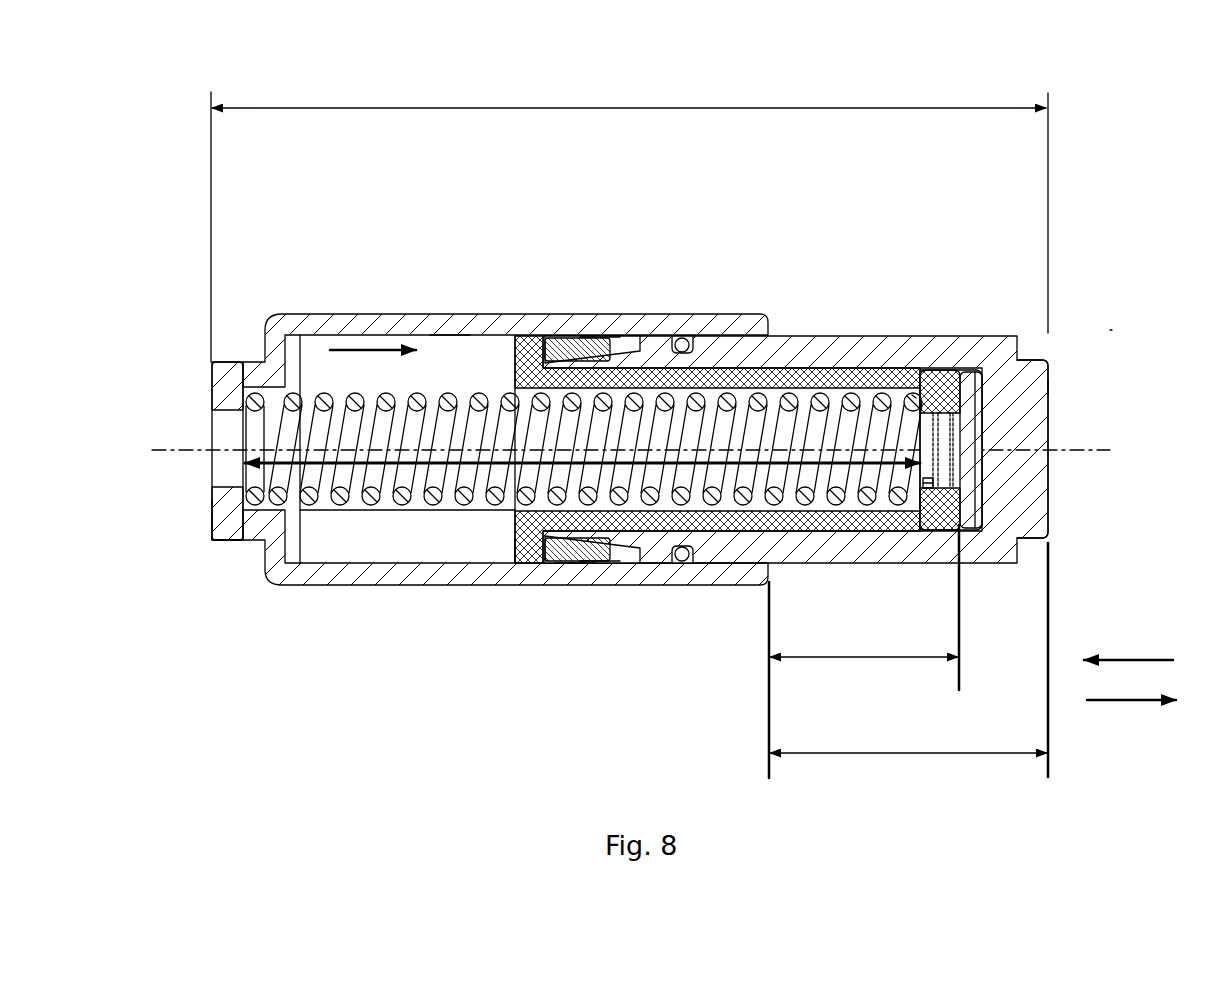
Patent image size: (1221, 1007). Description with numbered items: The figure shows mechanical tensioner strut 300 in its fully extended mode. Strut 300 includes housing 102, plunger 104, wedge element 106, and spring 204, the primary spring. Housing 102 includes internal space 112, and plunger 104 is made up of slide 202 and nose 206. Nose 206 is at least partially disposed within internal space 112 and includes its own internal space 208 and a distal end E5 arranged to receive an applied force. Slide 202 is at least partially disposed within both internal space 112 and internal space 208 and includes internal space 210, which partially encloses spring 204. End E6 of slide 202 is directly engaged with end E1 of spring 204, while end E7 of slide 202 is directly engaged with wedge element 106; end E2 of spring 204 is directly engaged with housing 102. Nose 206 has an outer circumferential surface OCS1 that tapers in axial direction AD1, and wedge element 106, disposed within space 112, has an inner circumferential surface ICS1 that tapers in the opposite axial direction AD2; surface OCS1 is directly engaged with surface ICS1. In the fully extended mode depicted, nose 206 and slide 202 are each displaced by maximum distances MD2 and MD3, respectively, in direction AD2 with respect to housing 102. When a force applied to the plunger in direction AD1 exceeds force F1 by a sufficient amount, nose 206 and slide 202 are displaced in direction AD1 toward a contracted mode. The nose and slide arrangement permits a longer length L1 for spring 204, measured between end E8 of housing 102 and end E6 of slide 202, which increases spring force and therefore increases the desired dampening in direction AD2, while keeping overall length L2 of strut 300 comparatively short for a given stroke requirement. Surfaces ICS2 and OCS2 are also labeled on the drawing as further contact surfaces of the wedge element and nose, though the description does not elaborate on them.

The housing 102 is at (316, 314).
The plunger 104 is at (864, 290).
The wedge element 106 is at (580, 331).
The internal space 112 is at (478, 522).
The slide 202 is at (906, 534).
The spring 204 is at (402, 514).
The nose 206 is at (1008, 337).
The internal space 208 is at (975, 545).
The internal space 210 is at (838, 390).
The mechanical tensioner strut 300 is at (1136, 181).
The end E1 is at (912, 393).
The end E2 is at (258, 385).
The distal end E5 is at (1050, 388).
The end E6 is at (932, 483).
The end E7 is at (528, 550).
The end E8 is at (235, 540).
The force F1 is at (363, 332).
The length L1 is at (752, 468).
The overall length L2 is at (672, 108).
The maximum distance MD2 is at (877, 757).
The maximum distance MD3 is at (877, 661).
The axial direction AD1 is at (1132, 658).
The axial direction AD2 is at (1128, 703).
The inner circumferential surface ICS1 is at (573, 545).
The second inner contact surface ICS2 is at (449, 333).
The outer circumferential surface OCS1 is at (600, 525).
The second outer contact surface OCS2 is at (595, 345).